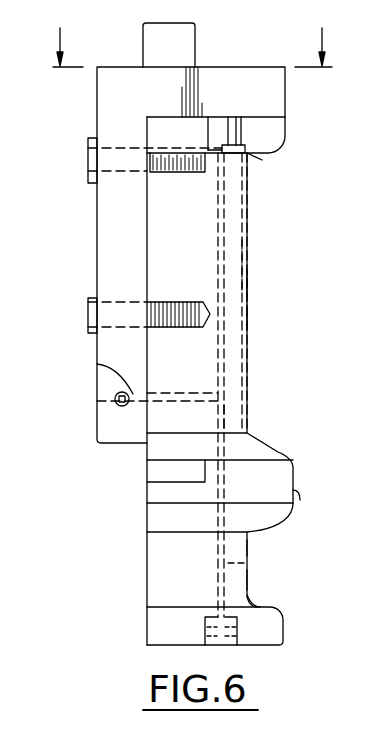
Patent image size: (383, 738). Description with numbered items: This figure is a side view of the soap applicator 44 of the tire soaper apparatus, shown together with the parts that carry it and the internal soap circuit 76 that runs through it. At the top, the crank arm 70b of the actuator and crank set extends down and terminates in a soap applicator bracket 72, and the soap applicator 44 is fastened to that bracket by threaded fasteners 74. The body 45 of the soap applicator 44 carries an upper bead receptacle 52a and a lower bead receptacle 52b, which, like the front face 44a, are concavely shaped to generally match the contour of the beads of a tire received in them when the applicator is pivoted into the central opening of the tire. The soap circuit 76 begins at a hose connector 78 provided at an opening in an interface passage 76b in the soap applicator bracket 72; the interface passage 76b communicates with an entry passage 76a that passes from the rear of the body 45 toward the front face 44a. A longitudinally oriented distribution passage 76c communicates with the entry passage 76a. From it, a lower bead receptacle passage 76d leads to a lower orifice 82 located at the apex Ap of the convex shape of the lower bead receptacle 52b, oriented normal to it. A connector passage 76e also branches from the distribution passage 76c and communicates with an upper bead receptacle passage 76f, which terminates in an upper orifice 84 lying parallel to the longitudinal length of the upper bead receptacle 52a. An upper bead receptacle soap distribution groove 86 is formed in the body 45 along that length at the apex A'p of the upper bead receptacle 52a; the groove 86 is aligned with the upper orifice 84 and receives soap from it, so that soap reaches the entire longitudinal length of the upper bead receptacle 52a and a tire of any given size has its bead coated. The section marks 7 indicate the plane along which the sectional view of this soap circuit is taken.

The section line 7- 7 is at (191, 46).
The crank arm 70b is at (143, 40).
The soap applicator bracket 72 is at (96, 246).
The threaded fasteners 74 is at (88, 172).
The internal soap circuit 76 is at (242, 374).
The entry passage 76a is at (172, 391).
The interface passage 76b is at (97, 364).
The distribution passage 76c is at (228, 418).
The lower bead receptacle passage 76d is at (255, 548).
The connector passage 76e is at (250, 143).
The upper bead receptacle passage 76f is at (262, 160).
The hose connector 78 is at (115, 399).
The lower orifice 82 is at (240, 562).
The upper orifice 84 is at (247, 155).
The upper bead receptacle soap distribution groove 86 is at (247, 265).
The apex of the upper bead receptacle A'p is at (281, 283).
The upper bead receptacle 52a is at (247, 318).
The body 45 is at (293, 460).
The front face 44a is at (300, 500).
The soap applicator 44 is at (145, 578).
The lower bead receptacle 52b is at (247, 578).
The apex of the lower bead receptacle Ap is at (250, 593).